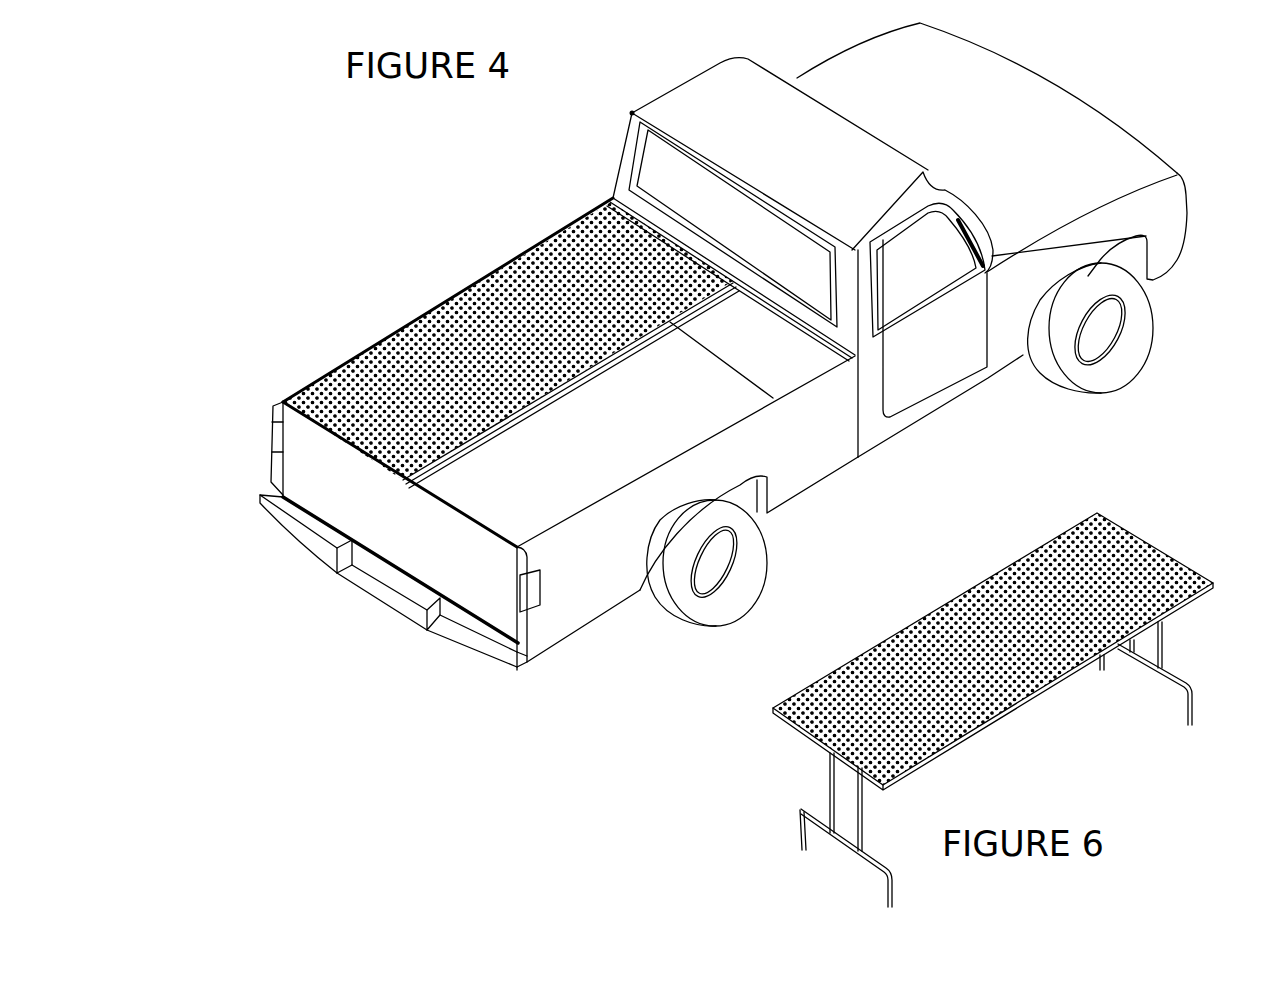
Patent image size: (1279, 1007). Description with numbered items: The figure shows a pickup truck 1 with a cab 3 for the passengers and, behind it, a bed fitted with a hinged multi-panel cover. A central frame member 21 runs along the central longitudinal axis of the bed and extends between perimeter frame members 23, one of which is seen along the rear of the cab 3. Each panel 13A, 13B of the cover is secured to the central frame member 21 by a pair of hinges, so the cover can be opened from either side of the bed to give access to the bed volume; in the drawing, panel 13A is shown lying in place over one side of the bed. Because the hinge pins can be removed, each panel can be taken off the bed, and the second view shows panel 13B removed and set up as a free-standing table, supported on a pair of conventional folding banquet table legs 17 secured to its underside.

In FIG. 4, the pickup truck 1 is at (466, 183).
In FIG. 4, the cab 3 is at (945, 164).
In FIG. 4, the panel 13A is at (442, 324).
In FIG. 6, the panel 13B is at (923, 618).
In FIG. 6, the table legs 17 is at (1162, 645).
In FIG. 4, the central frame member 21 is at (580, 372).
In FIG. 4, the perimeter frame member 23 is at (760, 303).